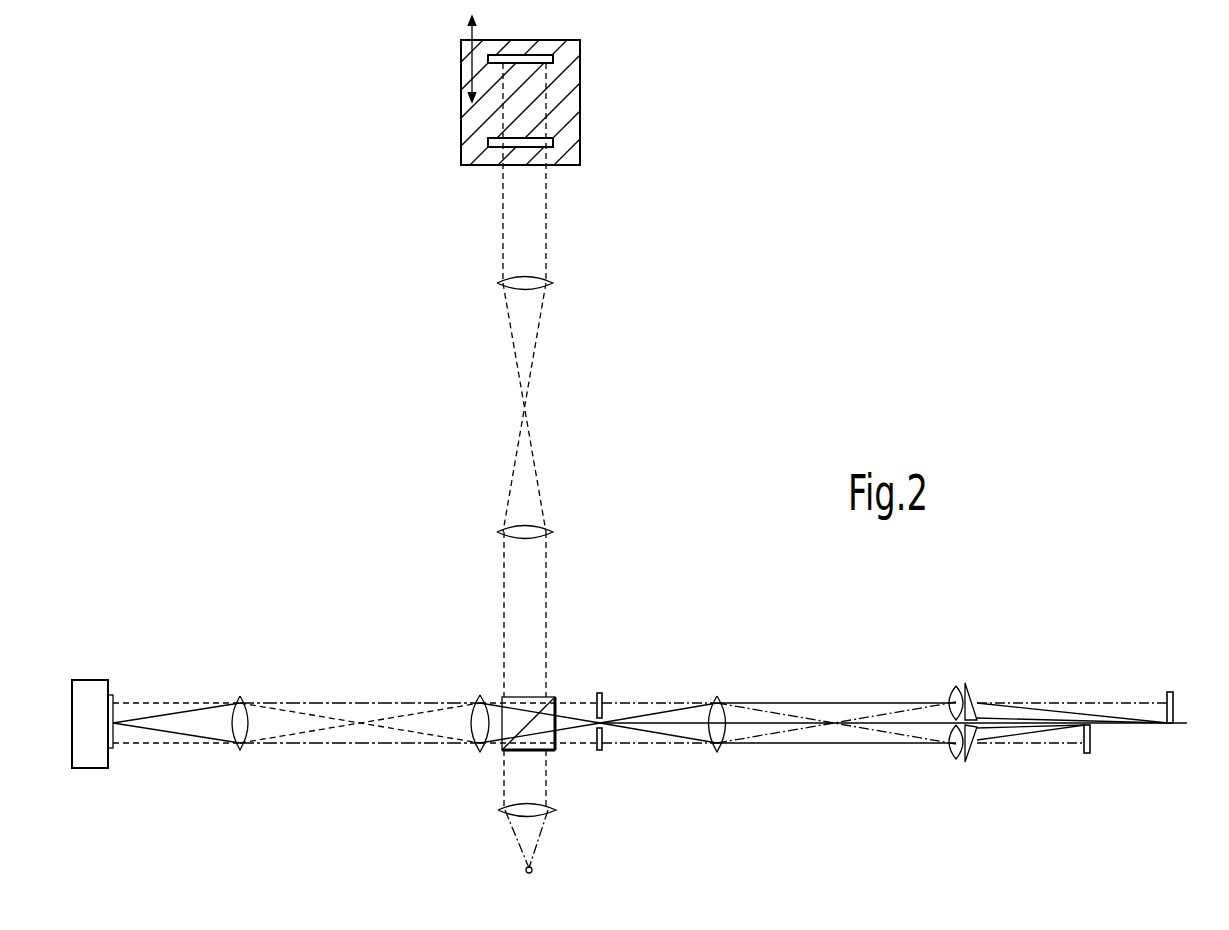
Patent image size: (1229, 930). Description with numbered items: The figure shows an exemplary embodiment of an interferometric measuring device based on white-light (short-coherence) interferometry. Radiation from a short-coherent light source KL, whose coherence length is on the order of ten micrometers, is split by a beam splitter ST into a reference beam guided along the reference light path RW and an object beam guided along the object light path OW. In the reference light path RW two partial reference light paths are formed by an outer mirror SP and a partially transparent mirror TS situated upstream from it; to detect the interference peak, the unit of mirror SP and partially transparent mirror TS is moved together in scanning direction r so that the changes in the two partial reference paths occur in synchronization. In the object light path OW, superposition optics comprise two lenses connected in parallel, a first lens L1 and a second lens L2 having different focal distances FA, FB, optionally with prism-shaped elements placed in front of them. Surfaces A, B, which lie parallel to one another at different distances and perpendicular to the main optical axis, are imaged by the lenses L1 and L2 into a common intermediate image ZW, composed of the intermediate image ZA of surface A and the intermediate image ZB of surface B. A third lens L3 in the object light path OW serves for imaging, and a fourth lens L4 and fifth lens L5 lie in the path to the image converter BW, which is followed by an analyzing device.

The partially transparent mirror TS is at (574, 140).
The outer mirror SP is at (572, 50).
The scanning direction r is at (463, 59).
The reference light path RW is at (494, 483).
The image converter BW is at (122, 693).
The fifth lens L5 is at (240, 696).
The fourth lens L4 is at (480, 695).
The beam splitter ST is at (503, 750).
The short-coherent light source KL is at (524, 870).
The common intermediate image ZW is at (614, 722).
The intermediate image of surface A ZA is at (598, 693).
The intermediate image of surface B ZB is at (599, 752).
The object light path OW is at (818, 758).
The third lens L3 is at (717, 696).
The first lens L1 is at (1058, 685).
The second lens L2 is at (1016, 762).
The surface A is at (1090, 745).
The surface B is at (1173, 695).
The focal distance of first lens FA is at (1080, 680).
The focal distance of second lens FB is at (1167, 662).